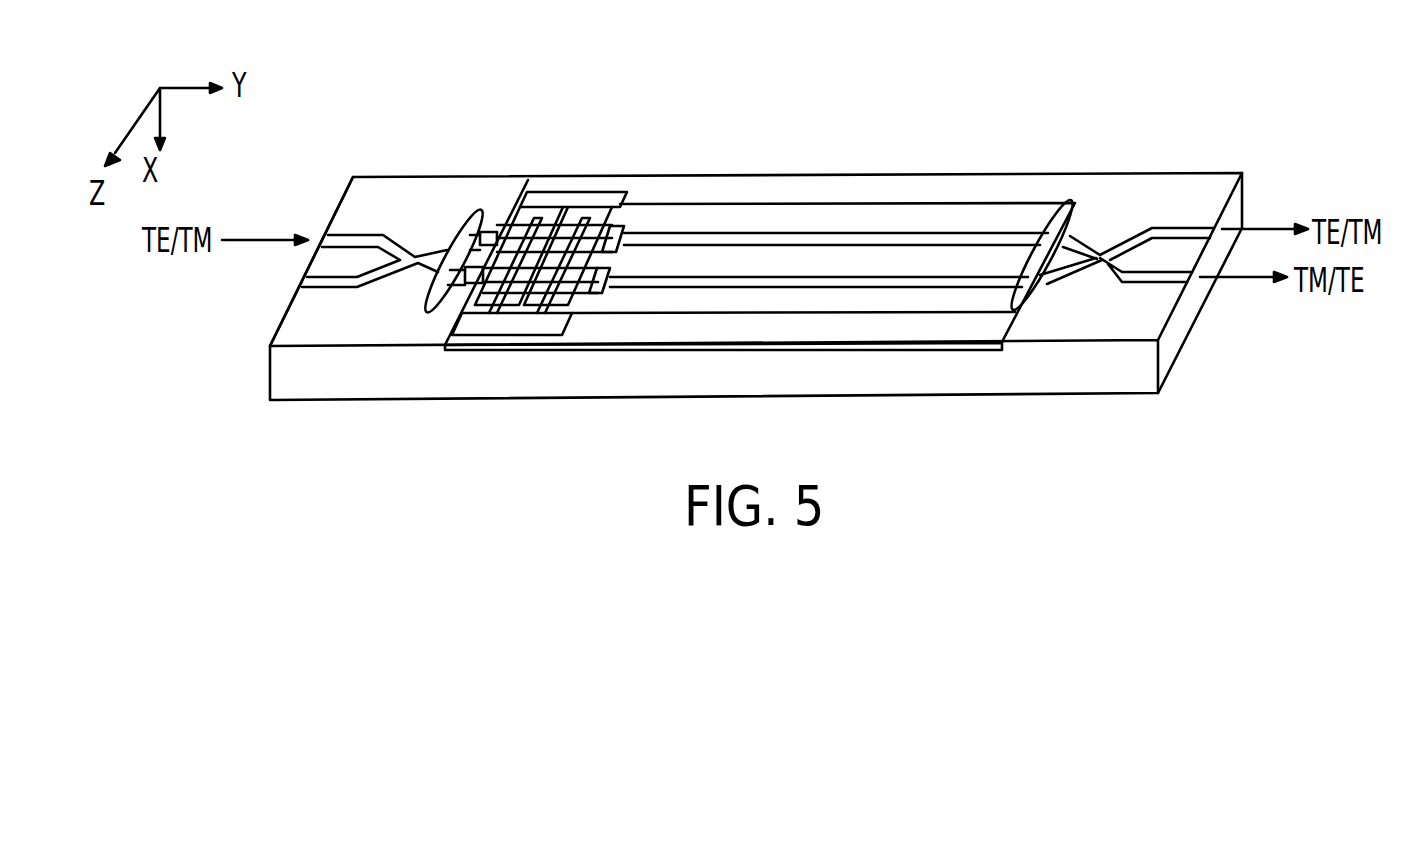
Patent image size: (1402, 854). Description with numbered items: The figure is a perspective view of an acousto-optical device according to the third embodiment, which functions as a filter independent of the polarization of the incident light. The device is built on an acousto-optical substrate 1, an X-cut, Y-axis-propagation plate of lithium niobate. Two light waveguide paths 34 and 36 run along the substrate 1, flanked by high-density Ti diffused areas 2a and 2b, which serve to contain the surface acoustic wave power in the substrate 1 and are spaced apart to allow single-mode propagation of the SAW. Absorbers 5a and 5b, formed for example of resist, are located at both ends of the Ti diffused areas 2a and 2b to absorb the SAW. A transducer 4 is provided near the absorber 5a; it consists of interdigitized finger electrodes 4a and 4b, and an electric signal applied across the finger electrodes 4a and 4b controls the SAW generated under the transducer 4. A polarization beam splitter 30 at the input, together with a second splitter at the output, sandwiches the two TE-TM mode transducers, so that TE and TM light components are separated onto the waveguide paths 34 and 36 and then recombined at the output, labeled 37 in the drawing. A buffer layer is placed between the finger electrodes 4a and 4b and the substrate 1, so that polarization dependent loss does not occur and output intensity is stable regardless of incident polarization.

The acousto-optical substrate 1 is at (270, 370).
The high-density Ti diffused area 2a is at (934, 186).
The high-density Ti diffused area 2b is at (905, 335).
The transducer 4 is at (556, 243).
The finger electrode 4a is at (613, 205).
The finger electrode 4b is at (560, 322).
The absorber 5a is at (479, 212).
The absorber 5b is at (1070, 205).
The polarization beam splitter 30 is at (415, 263).
The waveguide path 34 is at (758, 235).
The waveguide path 36 is at (762, 278).
The output Y-junction 37 is at (1098, 262).